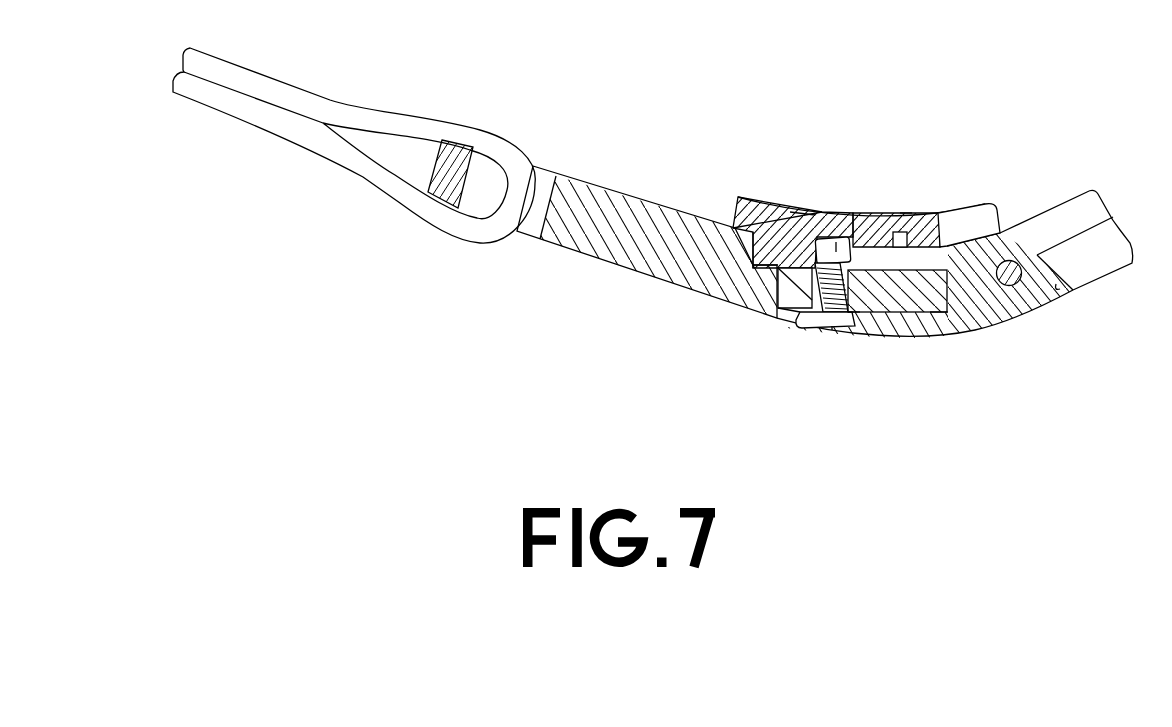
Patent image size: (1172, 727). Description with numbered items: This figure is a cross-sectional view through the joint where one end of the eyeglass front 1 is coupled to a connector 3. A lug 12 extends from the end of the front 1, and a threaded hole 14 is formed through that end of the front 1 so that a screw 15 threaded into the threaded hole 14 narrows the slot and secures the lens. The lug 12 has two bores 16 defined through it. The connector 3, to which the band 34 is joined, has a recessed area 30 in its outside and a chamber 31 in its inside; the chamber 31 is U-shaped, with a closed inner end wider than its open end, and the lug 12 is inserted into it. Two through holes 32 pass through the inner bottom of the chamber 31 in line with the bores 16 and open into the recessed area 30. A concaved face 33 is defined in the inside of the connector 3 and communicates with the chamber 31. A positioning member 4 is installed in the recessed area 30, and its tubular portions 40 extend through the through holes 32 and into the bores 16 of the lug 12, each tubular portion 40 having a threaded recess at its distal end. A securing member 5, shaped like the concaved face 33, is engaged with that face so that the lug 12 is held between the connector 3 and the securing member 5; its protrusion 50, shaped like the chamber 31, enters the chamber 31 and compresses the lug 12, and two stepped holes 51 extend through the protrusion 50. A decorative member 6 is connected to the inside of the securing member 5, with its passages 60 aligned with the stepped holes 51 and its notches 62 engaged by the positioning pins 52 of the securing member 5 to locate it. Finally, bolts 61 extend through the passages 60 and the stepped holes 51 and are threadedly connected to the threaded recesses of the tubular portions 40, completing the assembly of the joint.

The front 1 is at (987, 337).
The connector 3 is at (597, 263).
The positioning member 4 is at (832, 331).
The securing member 5 is at (925, 210).
The decorative member 6 is at (730, 208).
The lug 12 is at (925, 290).
The threaded hole 14 is at (1050, 303).
The screw 15 is at (1012, 286).
The bore 16 is at (773, 300).
The recessed area 30 is at (848, 314).
The chamber 31 is at (940, 312).
The through hole 32 is at (790, 308).
The concaved face 33 is at (763, 263).
The band 34 is at (233, 120).
The tubular portion 40 is at (813, 327).
The protrusion 50 is at (775, 240).
The stepped hole 51 is at (803, 225).
The positioning pin 52 is at (900, 232).
The passage 60 is at (835, 238).
The bolt 61 is at (838, 240).
The notch 62 is at (903, 212).